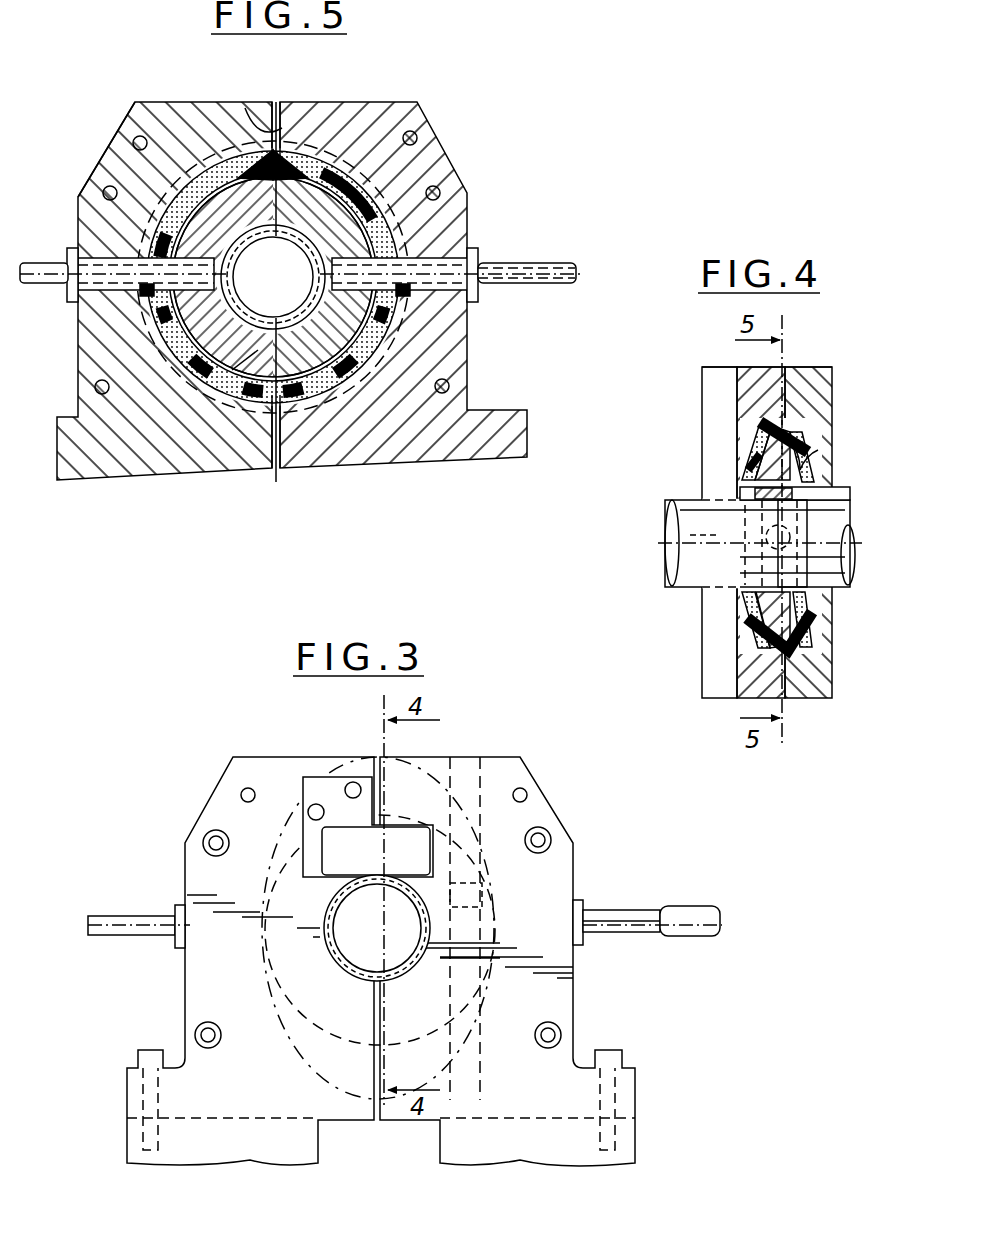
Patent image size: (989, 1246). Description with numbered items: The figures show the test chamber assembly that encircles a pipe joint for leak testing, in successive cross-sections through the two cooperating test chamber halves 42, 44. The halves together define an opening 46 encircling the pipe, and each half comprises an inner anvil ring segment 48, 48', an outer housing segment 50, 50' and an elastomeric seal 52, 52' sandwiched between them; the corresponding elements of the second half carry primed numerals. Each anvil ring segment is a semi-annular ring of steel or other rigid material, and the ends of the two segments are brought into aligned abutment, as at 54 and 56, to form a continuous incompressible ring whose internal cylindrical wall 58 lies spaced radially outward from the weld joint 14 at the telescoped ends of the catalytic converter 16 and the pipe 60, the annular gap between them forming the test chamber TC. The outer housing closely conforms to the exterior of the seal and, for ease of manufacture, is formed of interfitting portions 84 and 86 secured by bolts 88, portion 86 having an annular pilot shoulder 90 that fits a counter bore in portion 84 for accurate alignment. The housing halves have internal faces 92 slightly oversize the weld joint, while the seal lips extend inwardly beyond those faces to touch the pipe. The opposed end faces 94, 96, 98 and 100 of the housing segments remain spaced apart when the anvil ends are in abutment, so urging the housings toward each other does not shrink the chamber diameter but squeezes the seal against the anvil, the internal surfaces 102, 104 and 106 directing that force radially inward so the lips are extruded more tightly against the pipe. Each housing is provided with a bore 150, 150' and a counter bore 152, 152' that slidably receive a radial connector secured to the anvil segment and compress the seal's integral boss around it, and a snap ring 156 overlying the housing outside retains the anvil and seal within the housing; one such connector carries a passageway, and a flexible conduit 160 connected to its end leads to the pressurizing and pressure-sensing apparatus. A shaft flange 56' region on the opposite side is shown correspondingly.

In FIG. 4, the weld joint 14 is at (802, 480).
In FIG. 5, the catalytic converter 16 is at (302, 243).
In FIG. 4, the catalytic converter 16 is at (838, 526).
In FIG. 4, the test chamber half 42 is at (698, 366).
In FIG. 3, the test chamber half 42 is at (562, 802).
In FIG. 5, the test chamber half 44 is at (42, 270).
In FIG. 3, the test chamber half 44 is at (208, 800).
In FIG. 3, the opening 46 is at (346, 956).
In FIG. 5, the inner anvil ring segment 48 is at (394, 275).
In FIG. 4, the inner anvil ring segment 48 is at (838, 539).
In FIG. 5, the inner anvil ring segment 48' is at (232, 264).
In FIG. 5, the outer housing segment 50 is at (403, 275).
In FIG. 4, the outer housing segment 50 is at (716, 532).
In FIG. 5, the outer housing segment 50' is at (104, 139).
In FIG. 5, the elastomeric seal 52 is at (349, 277).
In FIG. 4, the elastomeric seal 52 is at (716, 537).
In FIG. 5, the elastomeric seal 52' is at (205, 277).
In FIG. 5, the anvil ring abutment 54 is at (282, 365).
In FIG. 5, the anvil ring abutment 56 is at (273, 233).
In FIG. 5, the shaft flange 56' is at (125, 289).
In FIG. 4, the internal cylindrical wall 58 is at (760, 582).
In FIG. 5, the pipe 60 is at (246, 250).
In FIG. 4, the pipe 60 is at (692, 556).
In FIG. 4, the housing portion 84 is at (716, 676).
In FIG. 4, the housing portion 86 is at (815, 678).
In FIG. 3, the bolts 88 is at (552, 840).
In FIG. 4, the annular pilot shoulder 90 is at (806, 392).
In FIG. 4, the housing face 92 is at (820, 491).
In FIG. 5, the housing end face 94 is at (276, 100).
In FIG. 5, the housing end face 96 is at (248, 112).
In FIG. 5, the housing end face 98 is at (272, 430).
In FIG. 5, the housing end face 100 is at (283, 458).
In FIG. 4, the housing internal surface 102 is at (802, 440).
In FIG. 4, the housing internal surface 104 is at (752, 448).
In FIG. 4, the housing internal surface 106 is at (772, 430).
In FIG. 5, the bore 150 is at (432, 256).
In FIG. 5, the bore 150' is at (121, 313).
In FIG. 5, the counter bore 152 is at (473, 307).
In FIG. 5, the counter bore 152' is at (129, 322).
In FIG. 5, the snap ring 156 is at (480, 286).
In FIG. 3, the flexible conduit 160 is at (702, 915).
In FIG. 5, the test chamber TC is at (286, 332).
In FIG. 4, the test chamber TC is at (750, 466).